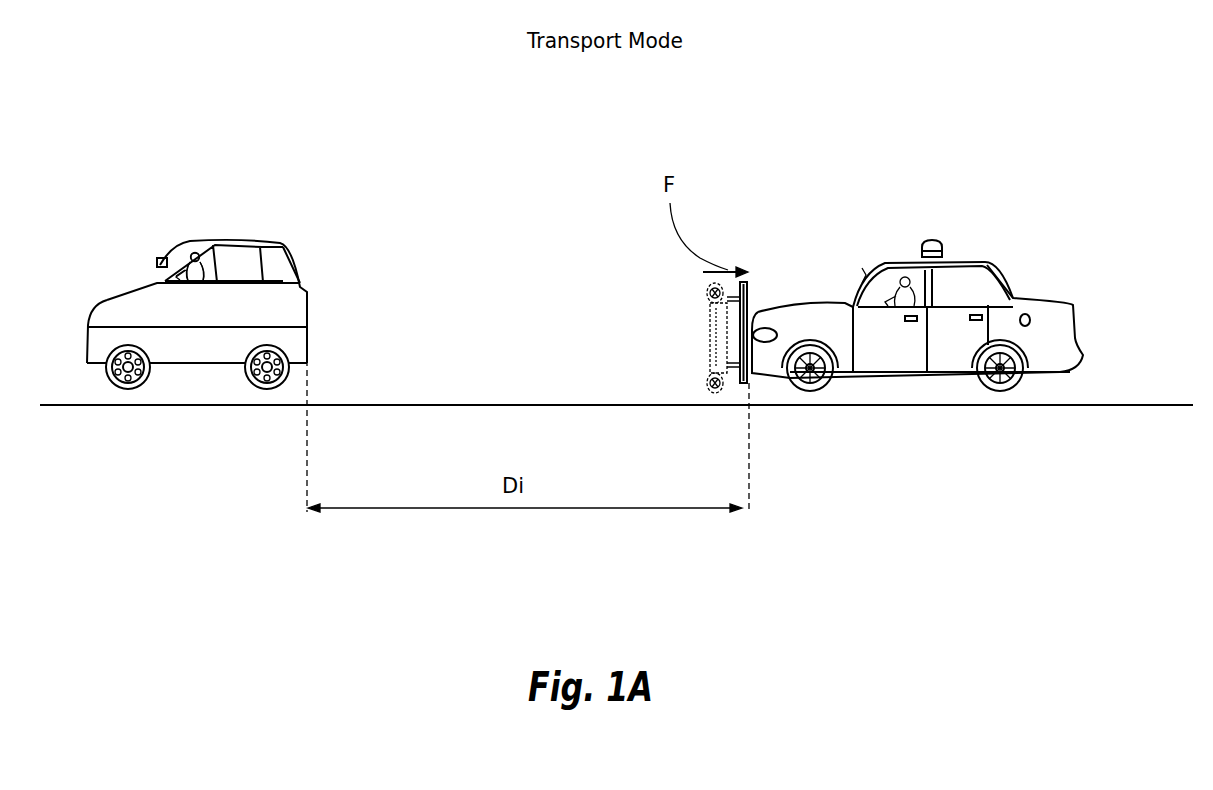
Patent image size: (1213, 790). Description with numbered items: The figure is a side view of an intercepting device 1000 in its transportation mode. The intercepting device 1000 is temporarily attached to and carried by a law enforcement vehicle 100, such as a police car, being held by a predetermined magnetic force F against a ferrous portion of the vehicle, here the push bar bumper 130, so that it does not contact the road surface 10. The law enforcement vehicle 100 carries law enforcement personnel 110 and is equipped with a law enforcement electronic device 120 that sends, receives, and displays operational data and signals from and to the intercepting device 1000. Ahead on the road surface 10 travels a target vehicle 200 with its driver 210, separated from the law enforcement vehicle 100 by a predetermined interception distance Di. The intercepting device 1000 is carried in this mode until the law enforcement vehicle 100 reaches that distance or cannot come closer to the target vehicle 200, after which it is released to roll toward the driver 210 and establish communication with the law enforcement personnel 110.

The road surface 10 is at (592, 403).
The law enforcement vehicle 100 is at (985, 210).
The law enforcement personnel 110 is at (903, 260).
The law enforcement electronic device 120 is at (868, 288).
The push bar bumper 130 is at (748, 383).
The target vehicle 200 is at (272, 202).
The driver 210 is at (187, 247).
The intercepting device 1000 is at (684, 288).